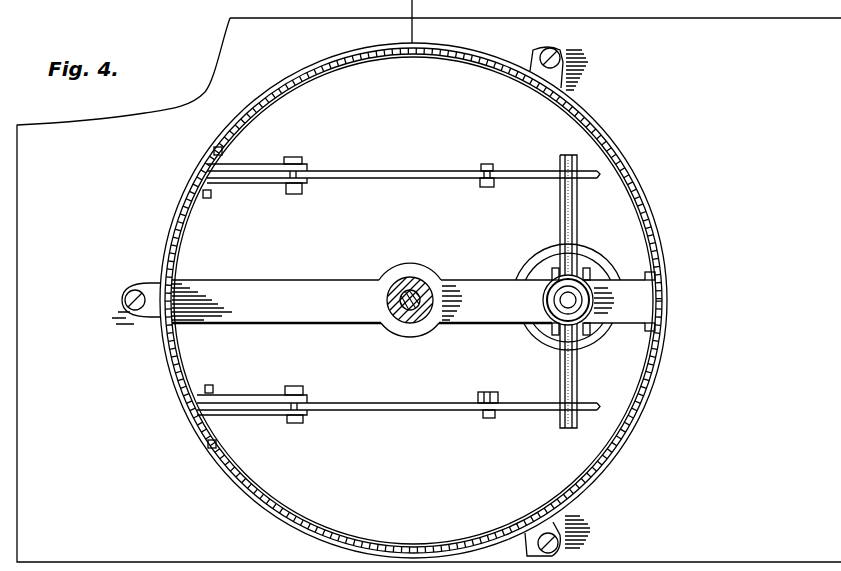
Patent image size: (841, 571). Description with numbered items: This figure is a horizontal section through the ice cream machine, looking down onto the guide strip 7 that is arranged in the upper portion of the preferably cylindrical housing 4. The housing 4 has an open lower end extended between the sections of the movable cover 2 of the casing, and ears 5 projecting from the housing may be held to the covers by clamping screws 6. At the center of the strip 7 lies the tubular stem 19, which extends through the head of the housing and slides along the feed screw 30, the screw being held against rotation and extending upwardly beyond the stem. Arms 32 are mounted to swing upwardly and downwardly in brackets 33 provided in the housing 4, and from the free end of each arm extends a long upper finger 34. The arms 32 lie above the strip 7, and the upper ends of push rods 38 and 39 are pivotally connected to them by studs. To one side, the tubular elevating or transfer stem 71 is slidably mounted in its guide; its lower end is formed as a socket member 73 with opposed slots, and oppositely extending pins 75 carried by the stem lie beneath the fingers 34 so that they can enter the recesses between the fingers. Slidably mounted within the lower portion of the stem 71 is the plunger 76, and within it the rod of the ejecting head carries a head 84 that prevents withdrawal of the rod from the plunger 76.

The movable cover 2 is at (429, 281).
The housing 4 is at (650, 241).
The ears 5 is at (537, 60).
The clamping screws 6 is at (558, 56).
The guide strip 7 is at (318, 288).
The tubular stem 19 is at (417, 281).
The feed screw 30 is at (400, 298).
The arms 32 is at (421, 171).
The brackets 33 is at (255, 166).
The long upper finger 34 is at (592, 182).
The push rod 38 is at (500, 398).
The push rod 39 is at (494, 183).
The tubular elevating or transfer stem 71 is at (538, 320).
The socket member 73 is at (534, 262).
The pins 75 is at (566, 221).
The plunger 76 is at (581, 275).
The head 84 is at (568, 300).